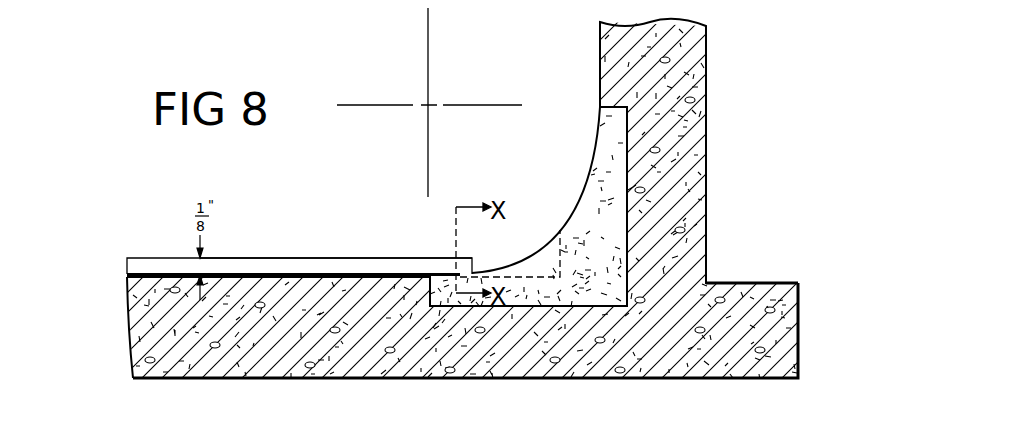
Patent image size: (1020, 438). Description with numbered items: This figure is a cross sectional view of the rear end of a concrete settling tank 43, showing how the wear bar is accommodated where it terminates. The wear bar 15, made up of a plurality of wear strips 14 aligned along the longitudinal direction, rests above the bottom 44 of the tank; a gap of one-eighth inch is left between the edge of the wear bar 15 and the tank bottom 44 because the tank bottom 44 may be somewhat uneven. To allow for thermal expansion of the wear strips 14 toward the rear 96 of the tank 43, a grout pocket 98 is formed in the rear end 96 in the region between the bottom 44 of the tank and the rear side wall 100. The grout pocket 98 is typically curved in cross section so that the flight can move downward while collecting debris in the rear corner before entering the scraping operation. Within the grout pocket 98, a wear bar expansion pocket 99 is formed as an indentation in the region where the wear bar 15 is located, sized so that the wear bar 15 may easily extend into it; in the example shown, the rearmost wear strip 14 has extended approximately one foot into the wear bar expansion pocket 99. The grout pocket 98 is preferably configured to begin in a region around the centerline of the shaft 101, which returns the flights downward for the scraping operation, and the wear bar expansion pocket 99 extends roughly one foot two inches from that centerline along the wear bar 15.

The wear strip 14 is at (318, 257).
The wear bar 15 is at (122, 250).
The tank 43 is at (812, 326).
The bottom of the tank 44 is at (284, 347).
The rear end of the tank 96 is at (677, 262).
The grout pocket 98 is at (620, 182).
The wear bar expansion pocket 99 is at (553, 243).
The rear side wall 100 is at (670, 86).
The shaft 101 is at (432, 102).